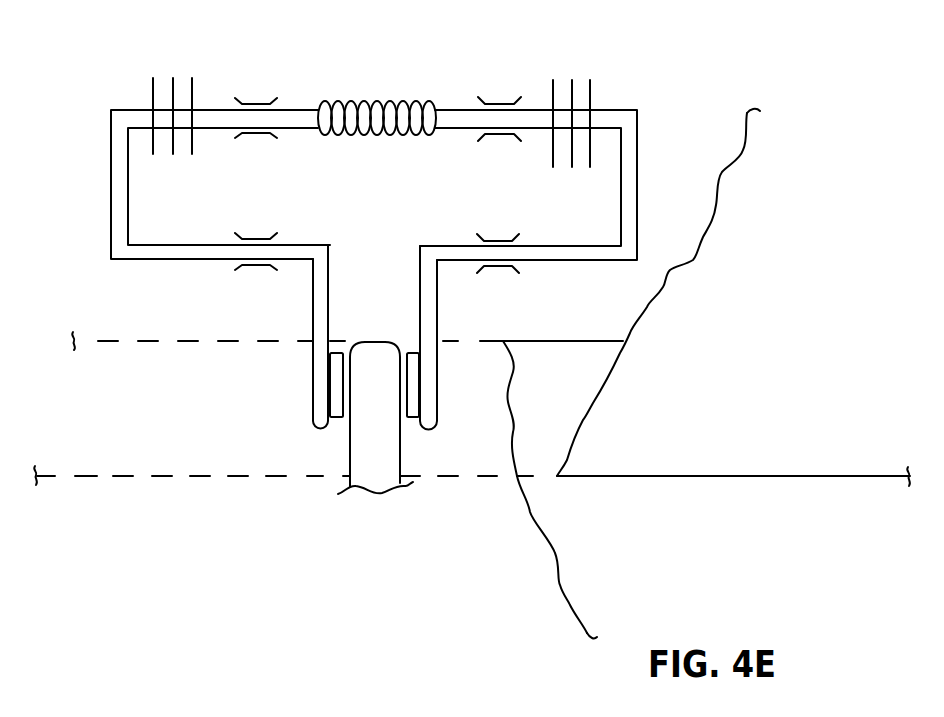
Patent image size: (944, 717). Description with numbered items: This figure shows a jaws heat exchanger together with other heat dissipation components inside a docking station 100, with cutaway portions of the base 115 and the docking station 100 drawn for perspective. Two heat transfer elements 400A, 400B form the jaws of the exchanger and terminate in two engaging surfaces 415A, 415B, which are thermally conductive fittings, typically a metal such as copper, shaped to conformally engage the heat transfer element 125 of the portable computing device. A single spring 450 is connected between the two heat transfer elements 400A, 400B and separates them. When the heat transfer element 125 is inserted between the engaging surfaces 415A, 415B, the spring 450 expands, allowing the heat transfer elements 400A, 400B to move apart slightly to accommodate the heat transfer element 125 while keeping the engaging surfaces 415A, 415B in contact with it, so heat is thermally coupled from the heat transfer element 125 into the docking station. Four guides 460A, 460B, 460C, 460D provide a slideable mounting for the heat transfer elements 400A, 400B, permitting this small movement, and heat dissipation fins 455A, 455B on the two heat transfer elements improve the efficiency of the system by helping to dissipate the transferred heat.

The docking station 100 is at (750, 157).
The base 115 is at (562, 557).
The heat transfer element 125 is at (375, 418).
The heat transfer element 400A is at (108, 182).
The heat transfer element 400B is at (638, 197).
The engaging surface 415A is at (335, 420).
The engaging surface 415B is at (412, 422).
The spring 450 is at (380, 92).
The heat dissipation fin 455A is at (168, 70).
The heat dissipation fin 455B is at (573, 72).
The guide 460A is at (258, 93).
The guide 460B is at (500, 96).
The guide 460C is at (255, 232).
The guide 460D is at (502, 232).